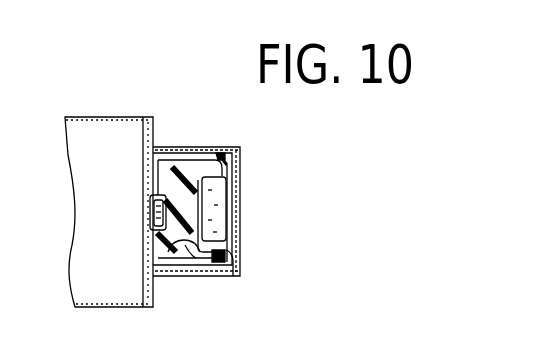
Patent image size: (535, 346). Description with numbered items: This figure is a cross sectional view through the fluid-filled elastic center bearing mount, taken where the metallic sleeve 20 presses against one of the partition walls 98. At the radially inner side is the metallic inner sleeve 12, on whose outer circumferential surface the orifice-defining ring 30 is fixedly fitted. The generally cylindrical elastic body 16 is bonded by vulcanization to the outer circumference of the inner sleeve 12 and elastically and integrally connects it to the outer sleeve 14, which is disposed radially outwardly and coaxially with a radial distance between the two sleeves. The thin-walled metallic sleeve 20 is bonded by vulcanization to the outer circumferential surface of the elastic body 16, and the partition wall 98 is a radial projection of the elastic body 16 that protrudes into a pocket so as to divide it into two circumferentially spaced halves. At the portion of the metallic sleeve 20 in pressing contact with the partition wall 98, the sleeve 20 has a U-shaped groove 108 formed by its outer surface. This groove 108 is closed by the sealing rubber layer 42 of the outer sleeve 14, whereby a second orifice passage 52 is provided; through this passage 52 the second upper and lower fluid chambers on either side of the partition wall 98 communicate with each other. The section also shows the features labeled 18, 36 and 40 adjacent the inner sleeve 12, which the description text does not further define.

The inner sleeve 12 is at (150, 117).
The outer sleeve 14 is at (234, 258).
The elastic body 16 is at (190, 146).
The panel flange 18 is at (143, 278).
The metallic sleeve 20 is at (226, 156).
The orifice-defining ring 30 is at (172, 240).
The retainer 36 is at (150, 207).
The retainer insert 40 is at (152, 222).
The sealing rubber layer 42 is at (232, 182).
The second orifice passage 52 is at (216, 228).
The partition wall 98 is at (195, 246).
The U-shaped groove 108 is at (226, 200).